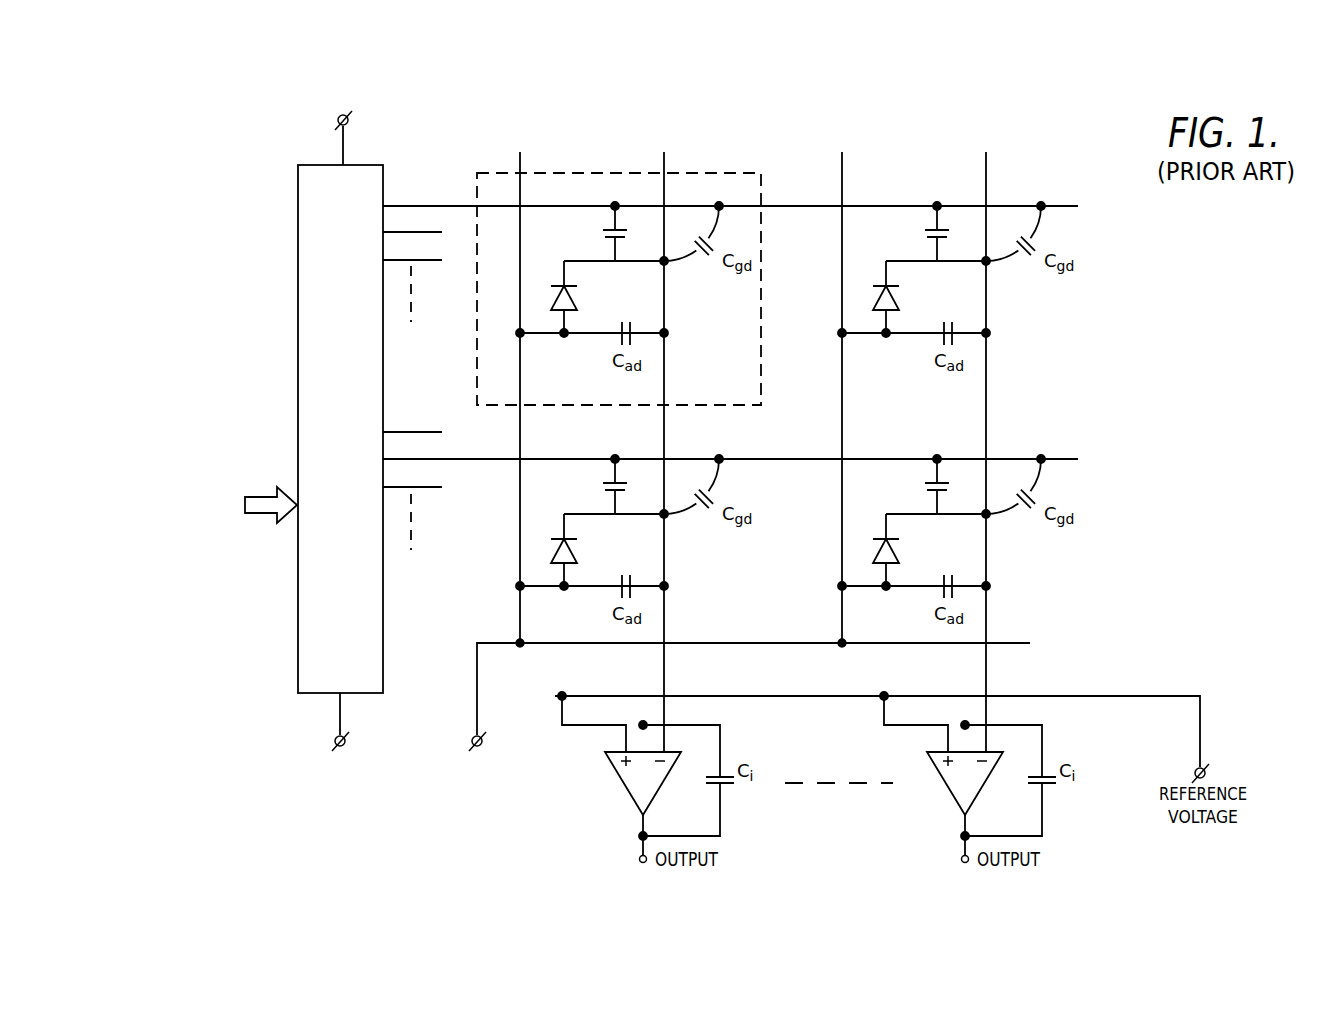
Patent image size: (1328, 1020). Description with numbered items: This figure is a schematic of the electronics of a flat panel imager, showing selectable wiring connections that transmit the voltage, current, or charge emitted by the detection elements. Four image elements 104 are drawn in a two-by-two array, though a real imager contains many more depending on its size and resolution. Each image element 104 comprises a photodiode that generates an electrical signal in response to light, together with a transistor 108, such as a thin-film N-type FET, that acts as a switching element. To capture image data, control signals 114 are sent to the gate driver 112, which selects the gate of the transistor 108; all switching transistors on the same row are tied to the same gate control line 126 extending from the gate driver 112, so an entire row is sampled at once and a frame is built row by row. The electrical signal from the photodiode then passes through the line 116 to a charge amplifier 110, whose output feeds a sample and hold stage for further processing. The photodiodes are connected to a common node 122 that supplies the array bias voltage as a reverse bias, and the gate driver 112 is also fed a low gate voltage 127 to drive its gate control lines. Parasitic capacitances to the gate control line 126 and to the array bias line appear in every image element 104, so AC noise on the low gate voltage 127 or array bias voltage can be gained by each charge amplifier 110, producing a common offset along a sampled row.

The image element 104 is at (478, 172).
The transistor 108 is at (602, 233).
The charge amplifier 110 is at (605, 752).
The gate driver 112 is at (298, 177).
The control signals 114 is at (200, 482).
The line 116 is at (664, 166).
The common node 122 is at (440, 752).
The gate line 126 is at (1068, 206).
The low gate voltage 127 is at (295, 774).